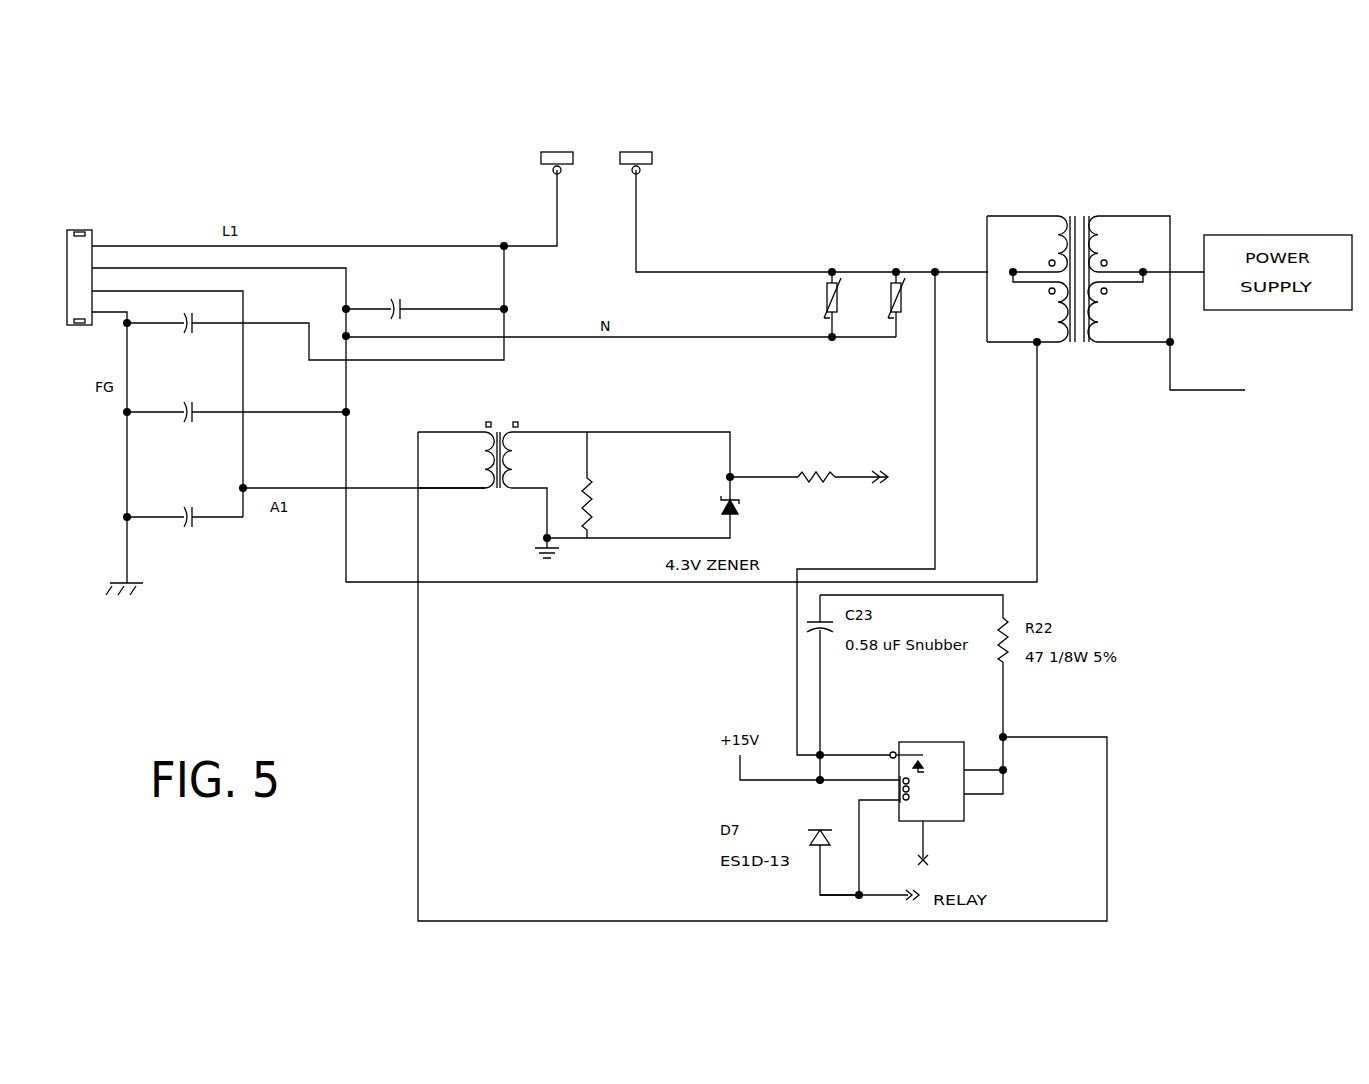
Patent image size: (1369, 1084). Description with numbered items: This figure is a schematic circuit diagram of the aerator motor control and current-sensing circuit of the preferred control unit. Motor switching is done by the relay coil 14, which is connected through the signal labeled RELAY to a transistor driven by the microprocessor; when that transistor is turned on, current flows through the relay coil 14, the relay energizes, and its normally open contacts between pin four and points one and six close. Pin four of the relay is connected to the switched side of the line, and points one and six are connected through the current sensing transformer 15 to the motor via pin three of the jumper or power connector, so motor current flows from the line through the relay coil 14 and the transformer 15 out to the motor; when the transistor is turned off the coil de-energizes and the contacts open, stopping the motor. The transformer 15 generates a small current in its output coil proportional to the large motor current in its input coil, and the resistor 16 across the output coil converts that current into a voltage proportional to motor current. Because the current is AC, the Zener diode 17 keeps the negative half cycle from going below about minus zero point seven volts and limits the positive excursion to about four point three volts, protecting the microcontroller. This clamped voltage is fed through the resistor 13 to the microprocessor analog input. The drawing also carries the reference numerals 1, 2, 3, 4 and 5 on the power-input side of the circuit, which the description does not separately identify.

The connector JH1 1 is at (103, 215).
The capacitor filter network 2 is at (212, 340).
The jumper connectors J1 J2 3 is at (667, 170).
The varistors RV2 RV3 4 is at (889, 195).
The power transformer T1 5 is at (1106, 145).
The resistor 13 is at (821, 460).
The relay coil 14 is at (946, 740).
The current sensing transformer 15 is at (513, 413).
The resistor 16 is at (642, 507).
The Zener diode 17 is at (742, 497).